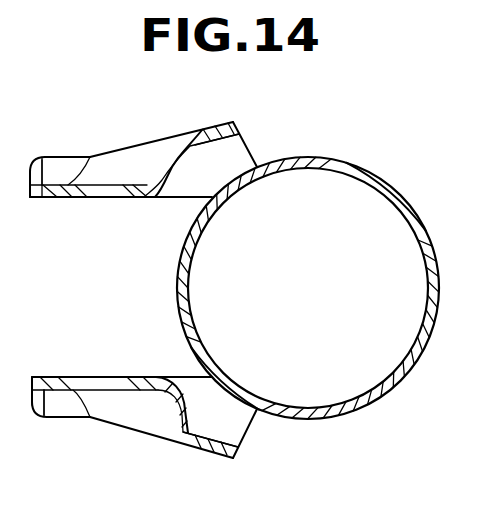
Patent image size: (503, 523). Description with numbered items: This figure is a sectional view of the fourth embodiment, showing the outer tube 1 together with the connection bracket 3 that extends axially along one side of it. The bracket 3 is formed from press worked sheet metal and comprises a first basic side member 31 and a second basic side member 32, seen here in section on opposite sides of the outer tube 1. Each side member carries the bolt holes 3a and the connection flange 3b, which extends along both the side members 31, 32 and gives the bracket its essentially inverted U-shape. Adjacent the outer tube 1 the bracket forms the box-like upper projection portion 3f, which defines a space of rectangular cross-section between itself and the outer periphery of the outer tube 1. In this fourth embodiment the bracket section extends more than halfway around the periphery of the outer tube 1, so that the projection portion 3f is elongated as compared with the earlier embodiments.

The outer tube 1 is at (423, 232).
The connection bracket 3 is at (250, 141).
The first basic side member 31 is at (171, 131).
The second basic side member 32 is at (170, 447).
The bolt holes 3a is at (100, 194).
The connection flange 3b is at (45, 199).
The upper projection portion 3f is at (218, 133).